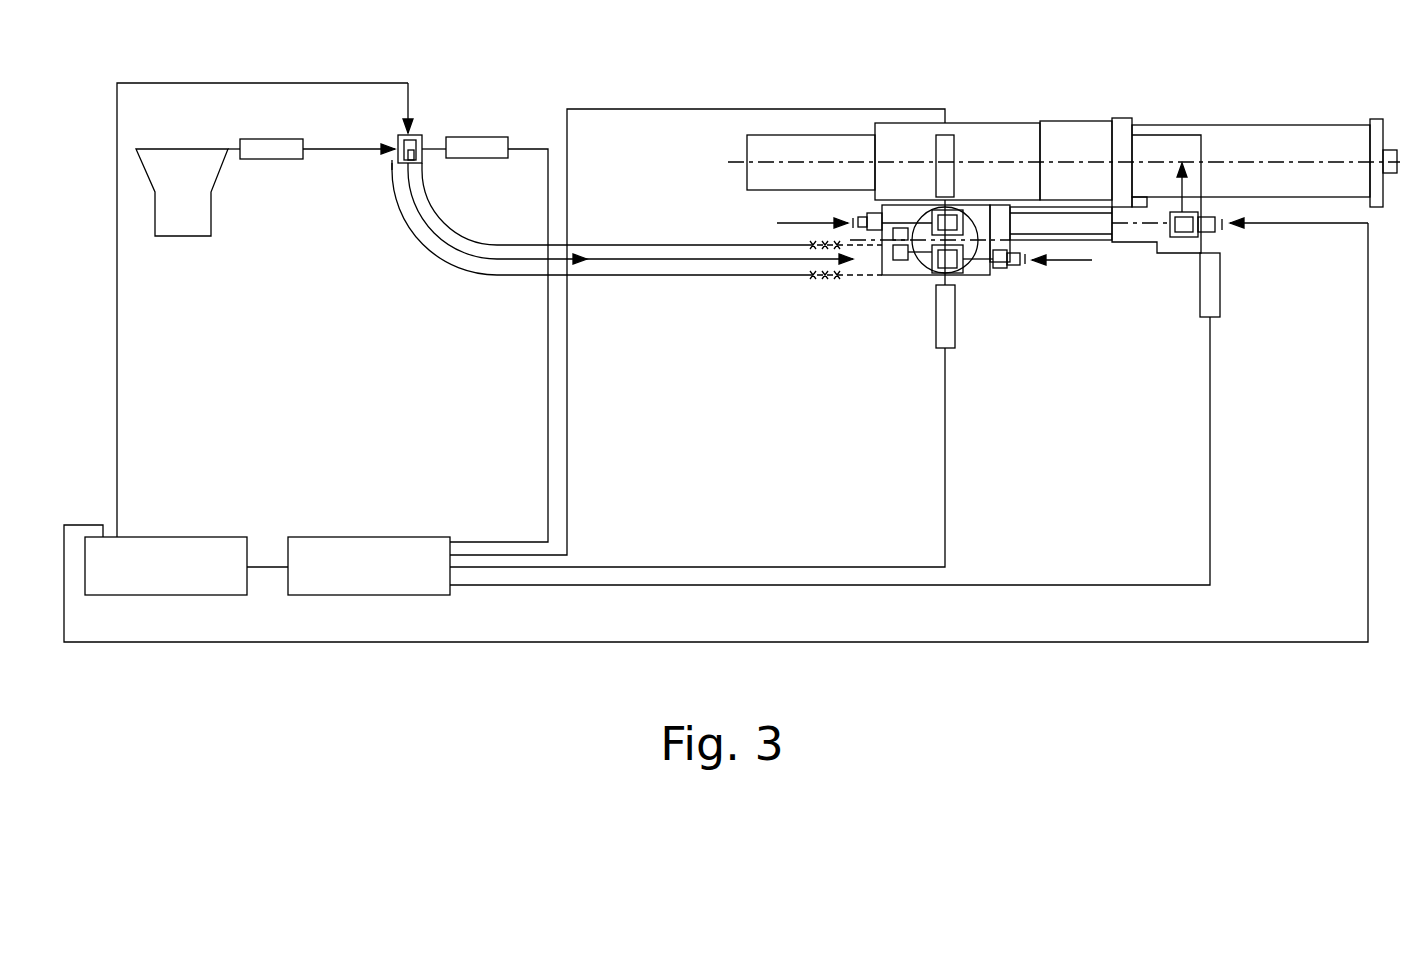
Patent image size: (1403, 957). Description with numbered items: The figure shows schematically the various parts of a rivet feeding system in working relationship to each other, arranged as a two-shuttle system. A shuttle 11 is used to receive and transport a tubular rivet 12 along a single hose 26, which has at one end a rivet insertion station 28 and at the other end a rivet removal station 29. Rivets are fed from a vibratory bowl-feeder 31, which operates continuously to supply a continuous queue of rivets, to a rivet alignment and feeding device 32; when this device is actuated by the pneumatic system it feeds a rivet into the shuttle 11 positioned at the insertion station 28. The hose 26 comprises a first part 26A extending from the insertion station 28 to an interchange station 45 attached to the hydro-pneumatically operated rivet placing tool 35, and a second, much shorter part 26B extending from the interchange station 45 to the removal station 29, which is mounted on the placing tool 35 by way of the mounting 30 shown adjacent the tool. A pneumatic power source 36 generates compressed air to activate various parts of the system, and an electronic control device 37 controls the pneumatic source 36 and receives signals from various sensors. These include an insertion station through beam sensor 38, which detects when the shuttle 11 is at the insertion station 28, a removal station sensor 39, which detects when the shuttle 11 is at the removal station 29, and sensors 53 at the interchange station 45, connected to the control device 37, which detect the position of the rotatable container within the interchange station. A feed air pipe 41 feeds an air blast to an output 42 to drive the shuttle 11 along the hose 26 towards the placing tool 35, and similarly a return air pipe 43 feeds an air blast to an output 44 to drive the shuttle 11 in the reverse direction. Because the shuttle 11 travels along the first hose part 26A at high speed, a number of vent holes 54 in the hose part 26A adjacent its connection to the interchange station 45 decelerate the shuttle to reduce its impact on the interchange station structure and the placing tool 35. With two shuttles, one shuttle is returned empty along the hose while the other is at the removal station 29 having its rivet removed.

The shuttle 11 is at (401, 133).
The tubular rivet 12 is at (407, 170).
The hose 26 is at (497, 278).
The first part of the hose 26A is at (703, 278).
The second part of the hose 26B is at (1100, 241).
The rivet insertion station 28 is at (426, 130).
The rivet removal station 29 is at (1183, 240).
The mounting bracket 30 is at (1184, 168).
The vibratory bowl-feeder 31 is at (183, 228).
The rivet alignment and feeding device 32 is at (260, 155).
The rivet placing tool 35 is at (1160, 122).
The pneumatic power source 36 is at (168, 536).
The electronic control device 37 is at (420, 536).
The insertion station through beam sensor 38 is at (505, 137).
The removal station sensor 39 is at (1220, 278).
The feed air pipe 41 is at (118, 358).
The output 42 is at (413, 128).
The return air pipe 43 is at (1367, 405).
The output 44 is at (1236, 226).
The interchange station 45 is at (924, 289).
The sensors 53 is at (955, 138).
The vent holes 54 is at (813, 278).